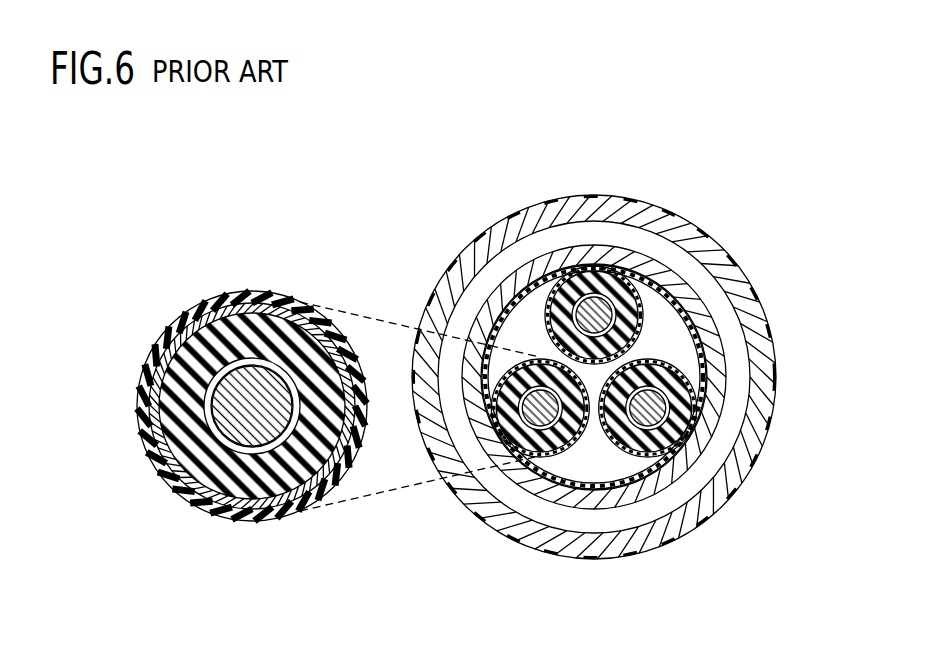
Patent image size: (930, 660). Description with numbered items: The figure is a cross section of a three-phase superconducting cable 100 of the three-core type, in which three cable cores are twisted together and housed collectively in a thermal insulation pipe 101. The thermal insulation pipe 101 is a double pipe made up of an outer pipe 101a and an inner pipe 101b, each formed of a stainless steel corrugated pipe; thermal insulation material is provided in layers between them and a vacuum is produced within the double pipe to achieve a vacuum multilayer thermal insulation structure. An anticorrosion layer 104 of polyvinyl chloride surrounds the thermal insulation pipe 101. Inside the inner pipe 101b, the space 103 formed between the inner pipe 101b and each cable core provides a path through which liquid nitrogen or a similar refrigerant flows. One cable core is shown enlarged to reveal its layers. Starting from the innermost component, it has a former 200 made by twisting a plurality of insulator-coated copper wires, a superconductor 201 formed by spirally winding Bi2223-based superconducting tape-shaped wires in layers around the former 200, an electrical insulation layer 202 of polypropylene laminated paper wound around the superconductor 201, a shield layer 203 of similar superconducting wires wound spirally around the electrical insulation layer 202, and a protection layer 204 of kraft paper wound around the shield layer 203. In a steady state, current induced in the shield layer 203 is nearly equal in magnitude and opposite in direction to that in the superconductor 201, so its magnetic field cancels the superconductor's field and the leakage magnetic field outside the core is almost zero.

The superconducting cable 100 is at (498, 550).
The thermal insulation pipe 101 is at (743, 147).
The outer pipe 101a is at (712, 262).
The inner pipe 101b is at (638, 262).
The space 103 is at (690, 346).
The anticorrosion layer 104 is at (768, 398).
The former 200 is at (228, 395).
The superconductor 201 is at (207, 415).
The electrical insulation layer 202 is at (172, 466).
The shield layer 203 is at (212, 498).
The protection layer 204 is at (270, 512).